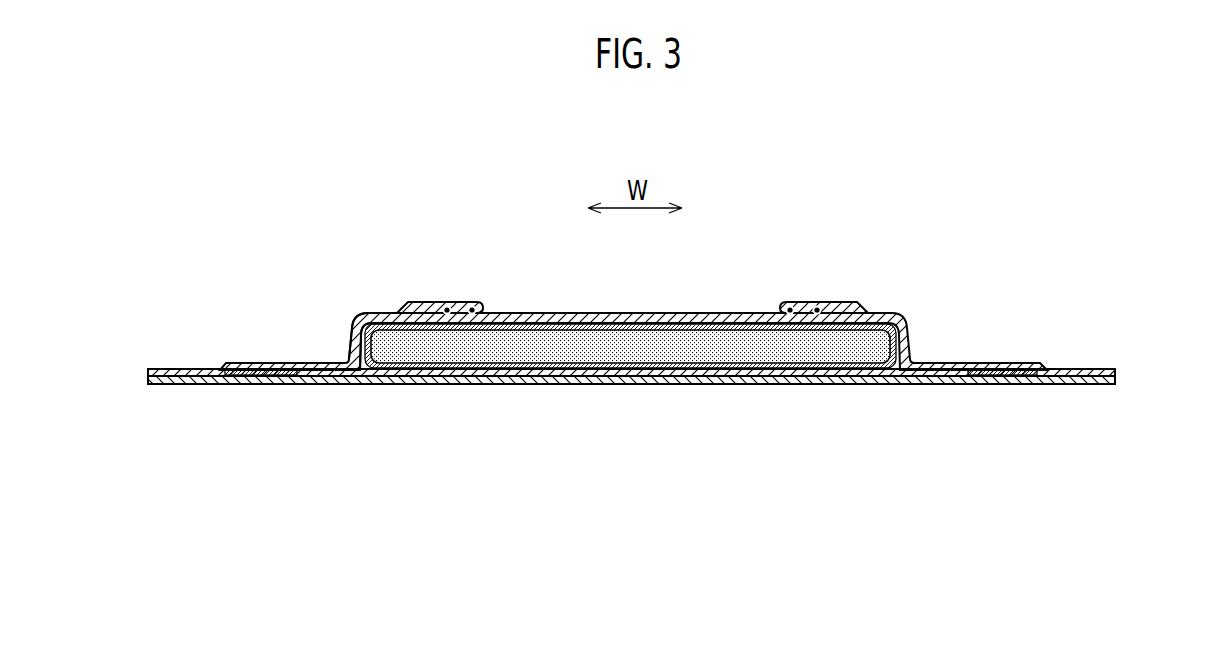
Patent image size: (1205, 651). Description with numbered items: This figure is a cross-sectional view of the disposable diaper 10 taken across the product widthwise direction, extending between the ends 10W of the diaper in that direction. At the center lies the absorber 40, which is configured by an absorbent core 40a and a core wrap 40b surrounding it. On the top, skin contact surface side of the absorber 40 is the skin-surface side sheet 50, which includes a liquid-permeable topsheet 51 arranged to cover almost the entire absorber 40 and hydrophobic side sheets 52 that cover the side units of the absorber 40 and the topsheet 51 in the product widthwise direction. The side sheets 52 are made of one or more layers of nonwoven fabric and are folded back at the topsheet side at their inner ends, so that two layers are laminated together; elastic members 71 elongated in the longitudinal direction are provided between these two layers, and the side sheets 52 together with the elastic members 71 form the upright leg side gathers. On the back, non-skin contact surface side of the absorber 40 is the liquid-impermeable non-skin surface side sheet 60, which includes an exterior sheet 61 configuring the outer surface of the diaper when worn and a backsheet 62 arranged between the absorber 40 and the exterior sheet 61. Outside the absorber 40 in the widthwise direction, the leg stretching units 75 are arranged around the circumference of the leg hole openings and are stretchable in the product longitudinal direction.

The disposable diaper 10 is at (872, 290).
The ends in the product widthwise direction 10W is at (147, 369).
The absorber 40 is at (273, 263).
The absorbent core 40a is at (374, 347).
The core wrap 40b is at (356, 322).
The skin-surface side sheet 50 is at (504, 312).
The topsheet 51 is at (688, 329).
The side sheets 52 is at (433, 302).
The non-skin surface side sheet 60 is at (748, 387).
The exterior sheet 61 is at (888, 376).
The backsheet 62 is at (946, 380).
The elastic members 71 is at (817, 308).
The leg stretching units 75 is at (1001, 370).